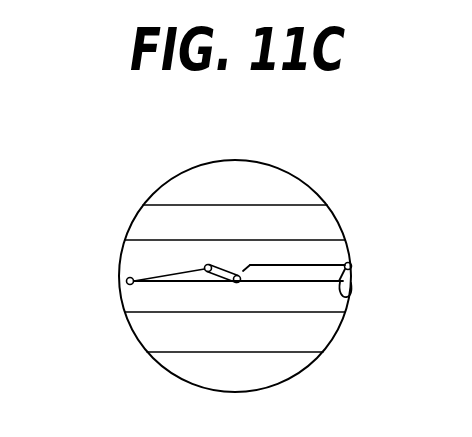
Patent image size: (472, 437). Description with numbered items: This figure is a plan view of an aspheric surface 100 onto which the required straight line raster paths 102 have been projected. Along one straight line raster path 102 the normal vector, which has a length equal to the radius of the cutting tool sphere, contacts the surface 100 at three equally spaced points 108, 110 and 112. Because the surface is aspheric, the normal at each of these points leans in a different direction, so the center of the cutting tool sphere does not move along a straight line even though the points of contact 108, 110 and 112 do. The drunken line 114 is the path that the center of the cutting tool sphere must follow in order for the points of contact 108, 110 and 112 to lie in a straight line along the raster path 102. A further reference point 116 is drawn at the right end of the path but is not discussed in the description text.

The aspheric surface 100 is at (133, 335).
The straight line raster path 102 is at (287, 282).
The point of contact 108 is at (126, 281).
The point of contact 110 is at (243, 271).
The point of contact 112 is at (347, 297).
The drunken line 114 is at (237, 275).
The pivot pin 116 is at (351, 264).